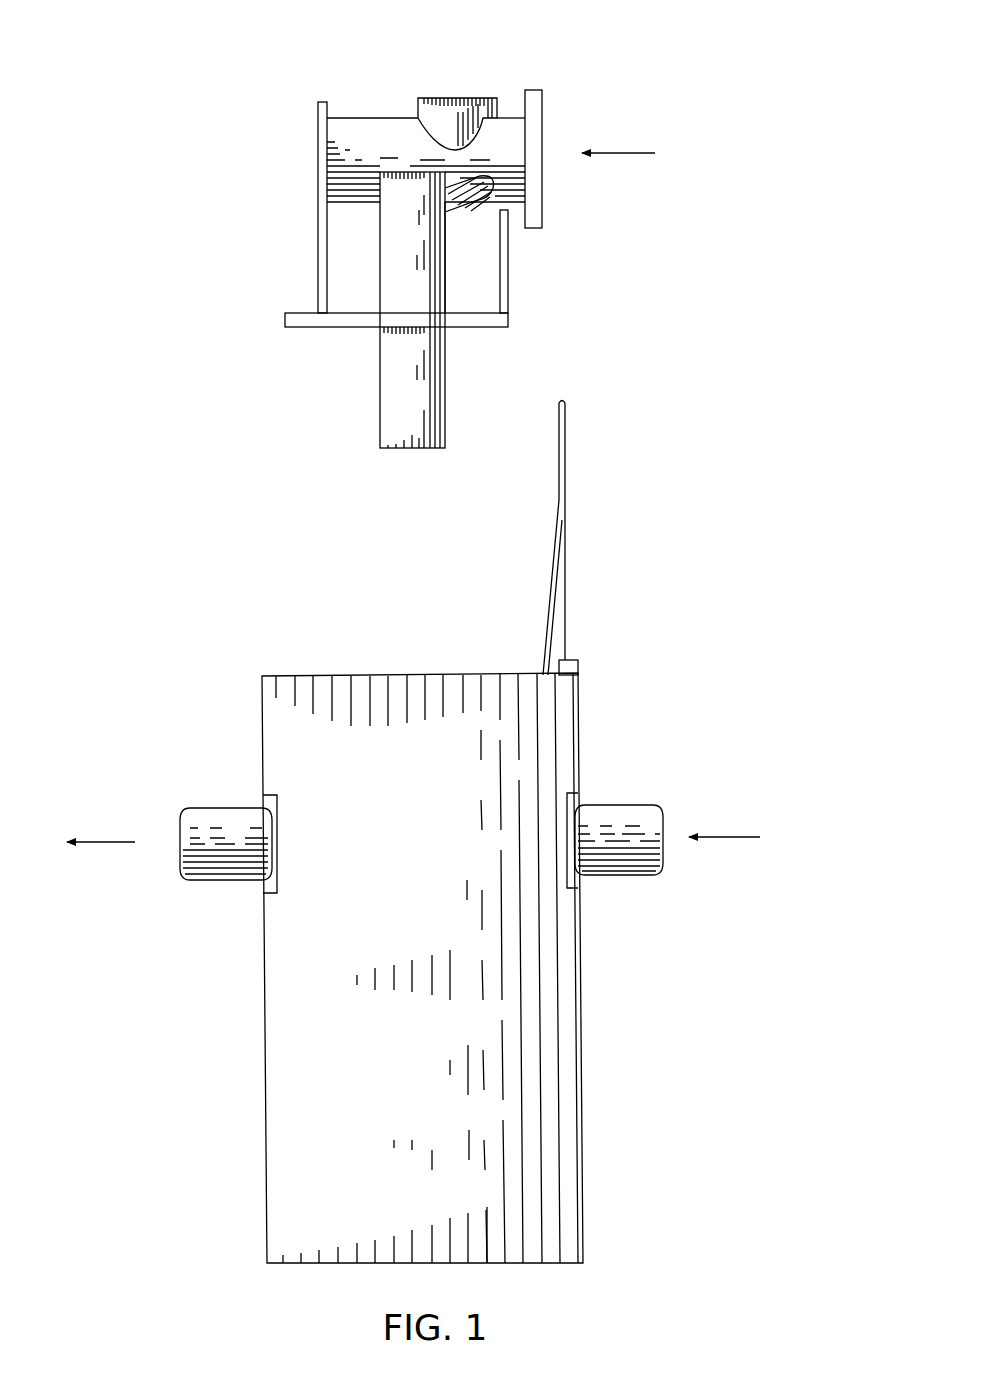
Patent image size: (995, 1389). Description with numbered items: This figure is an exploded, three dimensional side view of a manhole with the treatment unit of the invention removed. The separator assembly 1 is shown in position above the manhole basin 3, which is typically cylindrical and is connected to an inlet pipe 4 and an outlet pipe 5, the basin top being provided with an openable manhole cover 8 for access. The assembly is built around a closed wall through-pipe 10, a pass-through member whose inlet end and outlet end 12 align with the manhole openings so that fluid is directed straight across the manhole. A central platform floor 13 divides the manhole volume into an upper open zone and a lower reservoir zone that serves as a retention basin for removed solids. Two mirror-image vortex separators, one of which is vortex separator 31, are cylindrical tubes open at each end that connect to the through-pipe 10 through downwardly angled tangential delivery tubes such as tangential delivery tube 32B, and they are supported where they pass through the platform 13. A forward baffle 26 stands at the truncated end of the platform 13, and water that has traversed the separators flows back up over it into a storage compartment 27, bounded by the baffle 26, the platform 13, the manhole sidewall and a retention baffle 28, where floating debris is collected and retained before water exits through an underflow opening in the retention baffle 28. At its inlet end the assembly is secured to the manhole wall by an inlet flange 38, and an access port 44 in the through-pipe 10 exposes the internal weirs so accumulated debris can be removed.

The separator assembly 1 is at (594, 52).
The manhole basin 3 is at (267, 1073).
The inlet pipe 4 is at (617, 805).
The outlet pipe 5 is at (211, 808).
The manhole cover 8 is at (566, 480).
The through-pipe 10 is at (352, 118).
The outlet end 12 is at (304, 157).
The central platform floor 13 is at (310, 328).
The forward baffle 26 is at (508, 300).
The storage compartment 27 is at (466, 303).
The retention baffle 28 is at (318, 265).
The vortex separator 31 is at (446, 393).
The tangential delivery tube 32B is at (463, 212).
The inlet flange 38 is at (530, 90).
The access port 44 is at (450, 98).